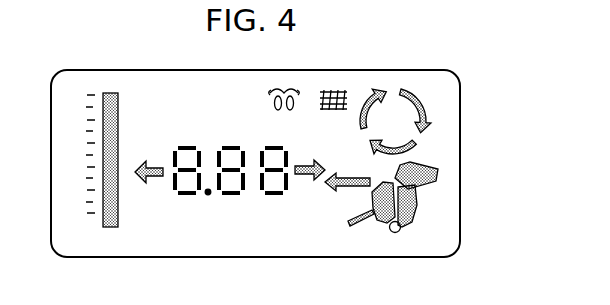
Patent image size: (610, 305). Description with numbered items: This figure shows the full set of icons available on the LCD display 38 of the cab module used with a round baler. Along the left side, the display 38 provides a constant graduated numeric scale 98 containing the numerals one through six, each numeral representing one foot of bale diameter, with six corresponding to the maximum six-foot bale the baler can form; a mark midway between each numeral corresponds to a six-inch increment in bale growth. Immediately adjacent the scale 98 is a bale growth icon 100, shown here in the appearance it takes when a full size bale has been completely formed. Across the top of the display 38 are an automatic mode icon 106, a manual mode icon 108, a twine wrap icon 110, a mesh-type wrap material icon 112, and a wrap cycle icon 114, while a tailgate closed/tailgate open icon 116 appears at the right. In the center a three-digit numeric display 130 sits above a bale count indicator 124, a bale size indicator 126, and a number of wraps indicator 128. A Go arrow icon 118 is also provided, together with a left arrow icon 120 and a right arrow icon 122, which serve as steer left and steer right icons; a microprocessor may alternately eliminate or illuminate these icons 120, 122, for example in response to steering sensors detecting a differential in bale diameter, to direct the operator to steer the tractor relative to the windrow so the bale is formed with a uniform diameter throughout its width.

The LCD display 38 is at (351, 70).
The graduated numeric scale 98 is at (70, 158).
The bale growth icon 100 is at (126, 213).
The automatic mode icon 106 is at (165, 80).
The manual mode icon 108 is at (225, 80).
The twine wrap icon 110 is at (283, 85).
The mesh-type wrap material icon 112 is at (335, 80).
The wrap cycle icon 114 is at (416, 90).
The tailgate closed/tailgate open icon 116 is at (420, 211).
The Go arrow icon 118 is at (340, 191).
The left arrow icon 120 is at (140, 184).
The right arrow icon 122 is at (312, 183).
The bale count indicator 124 is at (237, 229).
The bale size indicator 126 is at (187, 254).
The number of wraps indicator 128 is at (298, 254).
The 3-digit numeric display 130 is at (232, 143).